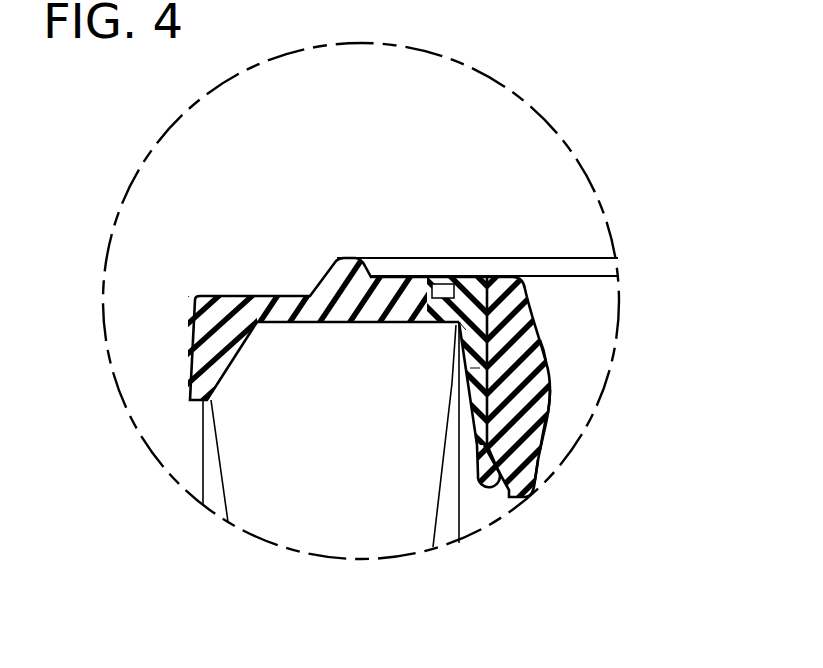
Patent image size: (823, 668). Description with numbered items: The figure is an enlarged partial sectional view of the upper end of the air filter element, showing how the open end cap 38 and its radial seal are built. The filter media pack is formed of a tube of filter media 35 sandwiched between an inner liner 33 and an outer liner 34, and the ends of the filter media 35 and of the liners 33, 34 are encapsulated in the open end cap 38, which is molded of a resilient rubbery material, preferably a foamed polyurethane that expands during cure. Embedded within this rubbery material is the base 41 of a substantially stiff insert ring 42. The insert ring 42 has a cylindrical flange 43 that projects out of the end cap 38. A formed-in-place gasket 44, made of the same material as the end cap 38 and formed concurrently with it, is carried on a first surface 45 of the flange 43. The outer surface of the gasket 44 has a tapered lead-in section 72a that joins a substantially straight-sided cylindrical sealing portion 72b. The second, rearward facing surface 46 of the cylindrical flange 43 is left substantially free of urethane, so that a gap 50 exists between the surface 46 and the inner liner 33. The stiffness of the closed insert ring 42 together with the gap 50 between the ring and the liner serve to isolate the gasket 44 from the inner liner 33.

The inner liner 33 is at (455, 408).
The outer liner 34 is at (203, 443).
The filter media 35 is at (356, 535).
The open end cap 38 is at (327, 282).
The base 41 is at (446, 295).
The insert ring 42 is at (470, 328).
The cylindrical flange 43 is at (545, 424).
The formed-in-place gasket 44 is at (548, 405).
The first surface 45 is at (537, 453).
The second surface 46 is at (478, 368).
The gap 50 is at (475, 500).
The tapered lead-in section 72a is at (543, 347).
The cylindrical sealing portion 72b is at (548, 387).